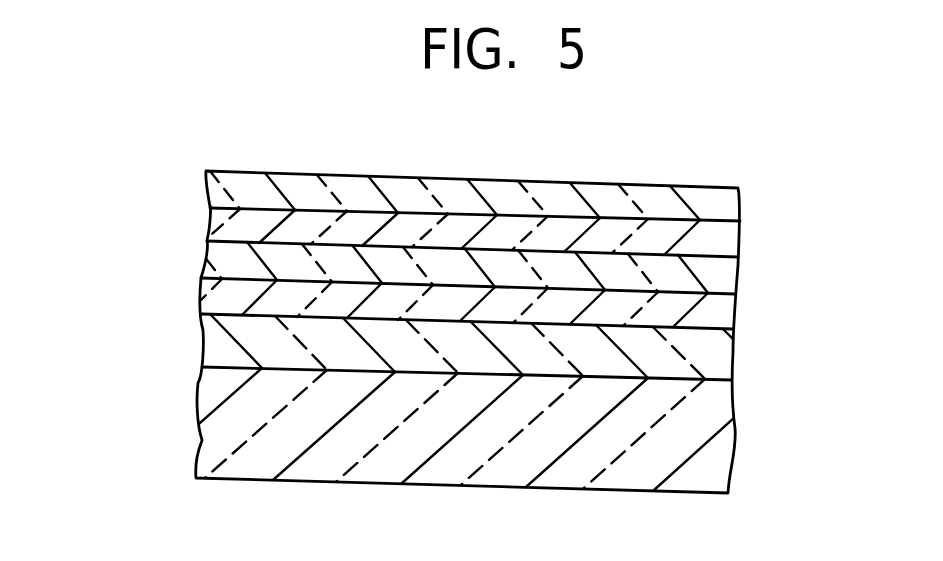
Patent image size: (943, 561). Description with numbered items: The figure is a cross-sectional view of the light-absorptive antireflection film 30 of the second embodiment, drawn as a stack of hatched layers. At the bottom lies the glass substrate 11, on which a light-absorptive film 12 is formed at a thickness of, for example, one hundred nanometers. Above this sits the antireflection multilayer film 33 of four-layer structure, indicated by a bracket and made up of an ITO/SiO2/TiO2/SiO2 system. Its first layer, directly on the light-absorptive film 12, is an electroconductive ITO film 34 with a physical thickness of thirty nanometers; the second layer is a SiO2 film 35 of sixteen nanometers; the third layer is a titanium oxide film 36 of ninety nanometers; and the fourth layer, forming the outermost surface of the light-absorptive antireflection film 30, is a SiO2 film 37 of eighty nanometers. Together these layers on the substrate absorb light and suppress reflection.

The light-absorptive antireflection film 30 is at (156, 403).
The antireflection multilayer film 33 is at (170, 167).
The SiO2 film 37 is at (740, 203).
The titanium oxide film 36 is at (740, 243).
The SiO2 film 35 is at (738, 284).
The ITO film 34 is at (735, 313).
The light-absorptive film 12 is at (733, 358).
The glass substrate 11 is at (735, 438).